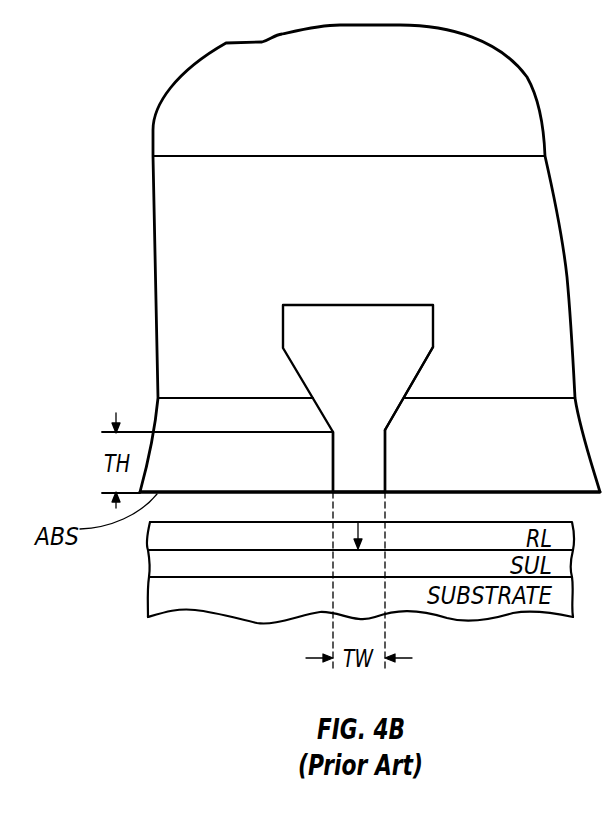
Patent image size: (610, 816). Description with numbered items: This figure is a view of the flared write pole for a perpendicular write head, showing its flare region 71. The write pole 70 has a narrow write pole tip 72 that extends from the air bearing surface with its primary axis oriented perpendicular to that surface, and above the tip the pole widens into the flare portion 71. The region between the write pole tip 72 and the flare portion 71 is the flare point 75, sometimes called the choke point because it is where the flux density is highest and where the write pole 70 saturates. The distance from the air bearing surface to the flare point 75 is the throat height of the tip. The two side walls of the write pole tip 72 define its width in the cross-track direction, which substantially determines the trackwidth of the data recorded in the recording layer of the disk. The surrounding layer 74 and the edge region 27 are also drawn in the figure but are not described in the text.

The yoke / return shield layer 74 is at (548, 201).
The flared write pole 70 is at (283, 318).
The flare region 71 is at (388, 408).
The write pole tip 72 is at (333, 452).
The flare point 75 is at (388, 432).
The air bearing surface edge 27 is at (274, 493).